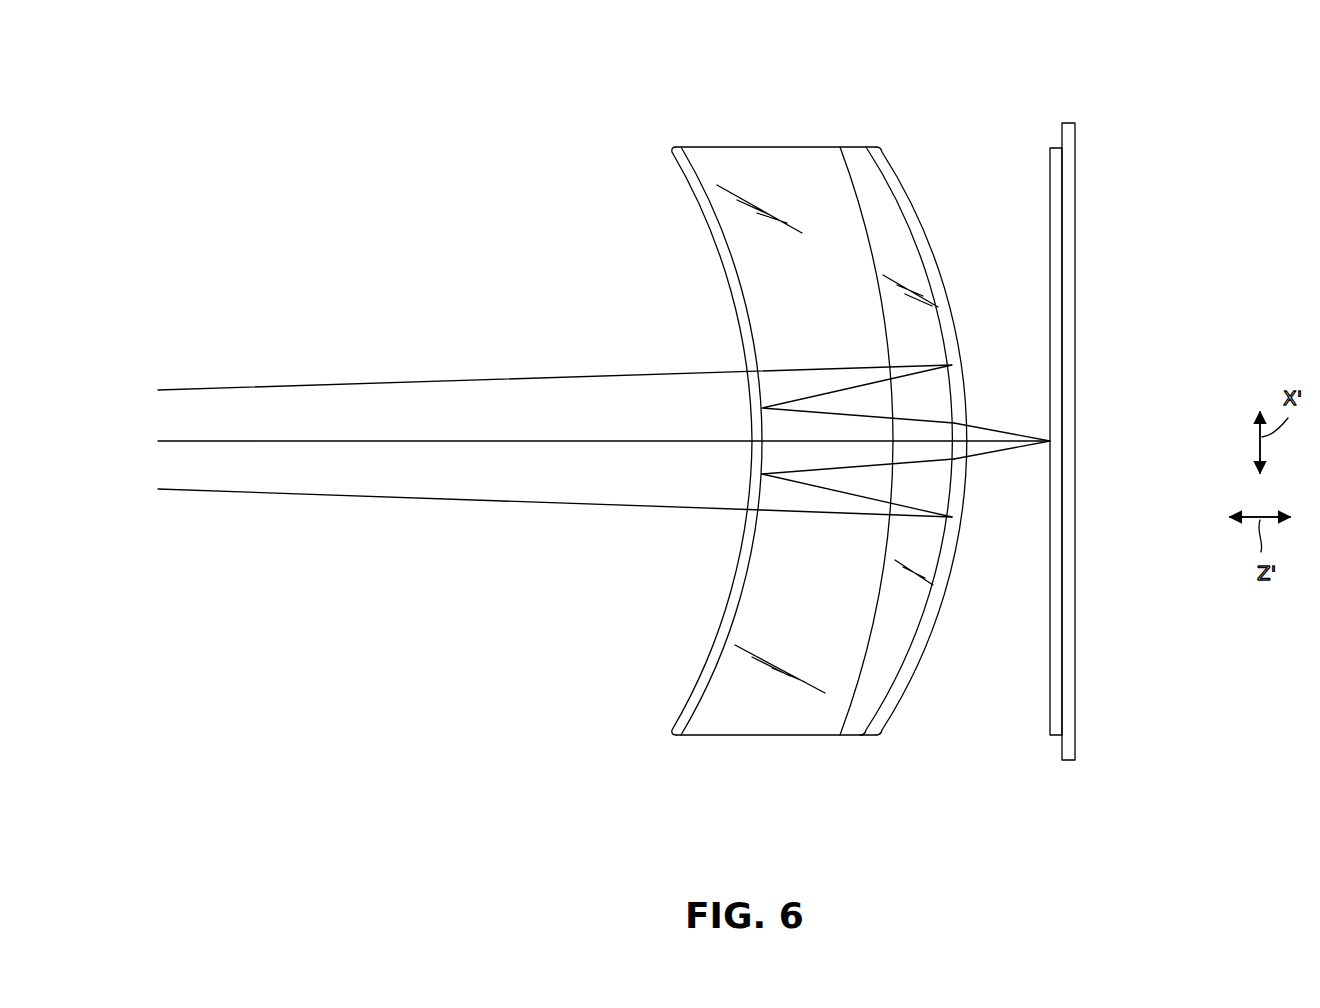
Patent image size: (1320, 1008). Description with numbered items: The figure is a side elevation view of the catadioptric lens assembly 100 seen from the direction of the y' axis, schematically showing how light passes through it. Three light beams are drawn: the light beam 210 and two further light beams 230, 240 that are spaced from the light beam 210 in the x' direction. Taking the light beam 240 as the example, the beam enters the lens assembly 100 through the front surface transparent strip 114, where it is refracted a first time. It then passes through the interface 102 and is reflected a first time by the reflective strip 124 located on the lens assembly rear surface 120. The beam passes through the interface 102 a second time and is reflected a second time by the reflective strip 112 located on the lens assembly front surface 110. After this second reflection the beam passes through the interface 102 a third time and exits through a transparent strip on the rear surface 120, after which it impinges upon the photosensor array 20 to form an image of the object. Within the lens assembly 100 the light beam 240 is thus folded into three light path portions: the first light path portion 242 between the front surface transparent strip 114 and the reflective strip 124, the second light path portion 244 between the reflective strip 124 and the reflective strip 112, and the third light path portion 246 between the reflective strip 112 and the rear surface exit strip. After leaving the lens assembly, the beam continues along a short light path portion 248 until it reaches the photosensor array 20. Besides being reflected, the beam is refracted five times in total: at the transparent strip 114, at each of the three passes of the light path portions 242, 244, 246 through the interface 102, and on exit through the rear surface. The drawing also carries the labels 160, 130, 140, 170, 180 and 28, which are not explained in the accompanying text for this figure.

The lens assembly 100 is at (760, 424).
The lens body 160 is at (764, 428).
The top edge surface 130 is at (716, 146).
The bottom edge surface 140 is at (768, 736).
The reflective strip 112 is at (727, 275).
The front surface transparent strip 114 is at (727, 612).
The lens assembly front surface 110 is at (752, 318).
The lens assembly rear surface 120 is at (910, 441).
The interface 102 is at (893, 340).
The reflective strip 124 is at (927, 643).
The upper lens region 170 is at (788, 176).
The lower lens region 180 is at (877, 668).
The photosensor array 20 is at (1050, 158).
The detector 28 is at (1068, 123).
The light beam 230 is at (452, 378).
The light beam 210 is at (465, 440).
The light beam 240 is at (452, 505).
The first light path portion 242 is at (787, 514).
The second light path portion 244 is at (853, 500).
The third light path portion 246 is at (810, 470).
The short light path portion 248 is at (1007, 455).